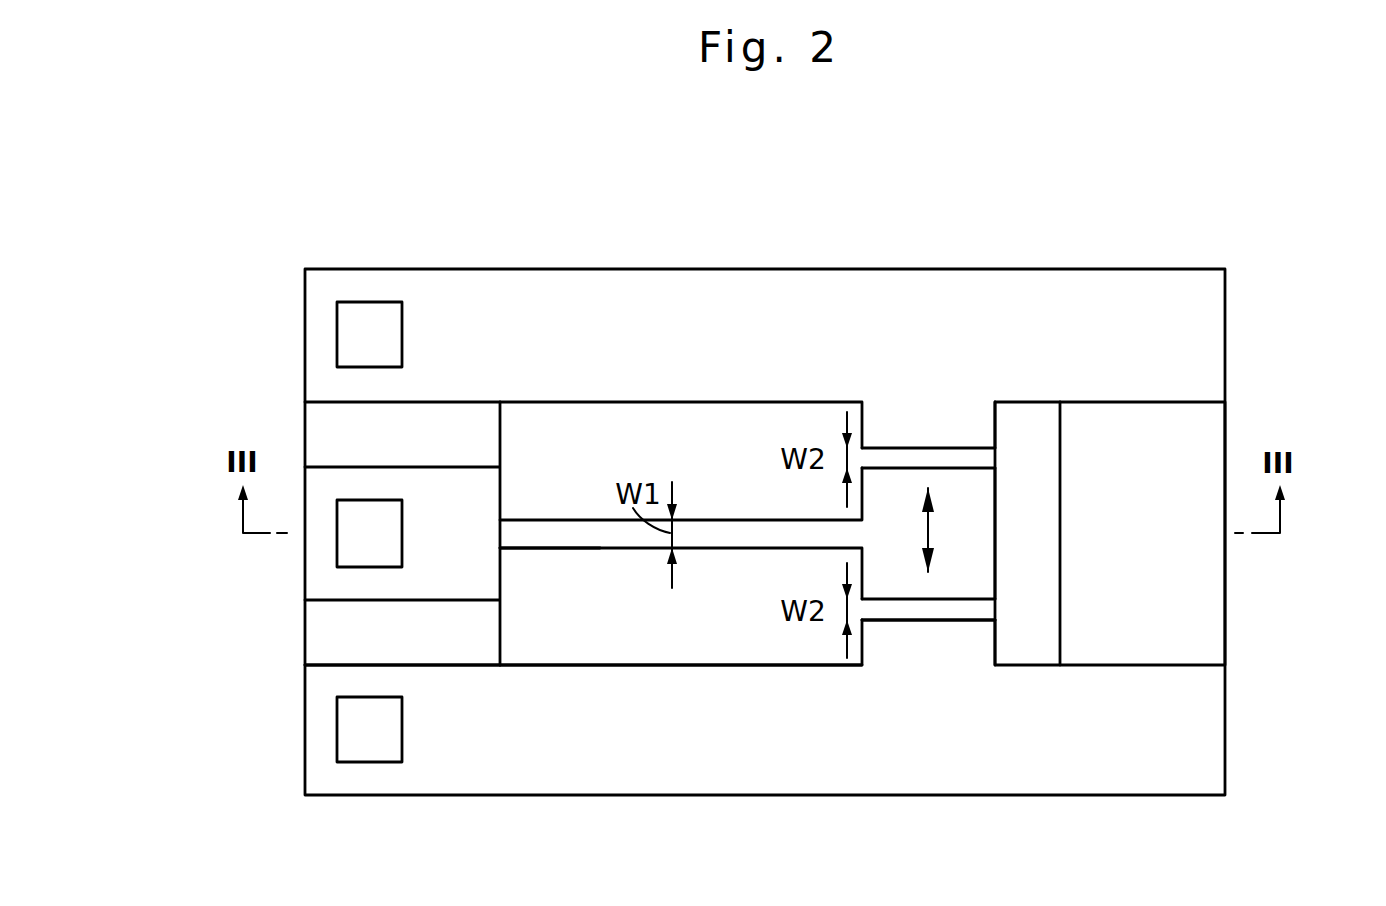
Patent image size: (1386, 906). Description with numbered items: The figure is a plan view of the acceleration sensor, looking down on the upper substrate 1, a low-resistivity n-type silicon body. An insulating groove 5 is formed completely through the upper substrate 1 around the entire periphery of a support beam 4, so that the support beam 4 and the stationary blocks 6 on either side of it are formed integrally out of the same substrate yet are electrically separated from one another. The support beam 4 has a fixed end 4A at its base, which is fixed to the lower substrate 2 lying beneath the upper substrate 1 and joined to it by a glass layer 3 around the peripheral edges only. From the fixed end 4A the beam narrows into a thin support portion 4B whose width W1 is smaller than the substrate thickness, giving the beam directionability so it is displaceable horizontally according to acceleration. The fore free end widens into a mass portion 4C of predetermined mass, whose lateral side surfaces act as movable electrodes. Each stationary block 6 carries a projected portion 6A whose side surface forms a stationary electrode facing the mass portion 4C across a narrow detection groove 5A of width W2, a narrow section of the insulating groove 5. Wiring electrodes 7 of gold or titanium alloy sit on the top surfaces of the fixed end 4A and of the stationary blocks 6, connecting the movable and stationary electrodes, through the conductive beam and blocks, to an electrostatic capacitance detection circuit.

The upper substrate 1 is at (651, 266).
The lower substrate 2 is at (656, 648).
The glass layer 3 is at (453, 648).
The support beam 4 is at (753, 540).
The fixed end 4A is at (318, 583).
The thin support portion 4B is at (572, 527).
The mass portion 4C is at (960, 580).
The insulating groove 5 is at (553, 435).
The detection groove 5A is at (977, 458).
The stationary block 6 is at (808, 285).
The projected portion 6A is at (925, 435).
The wiring electrode 7 is at (358, 333).